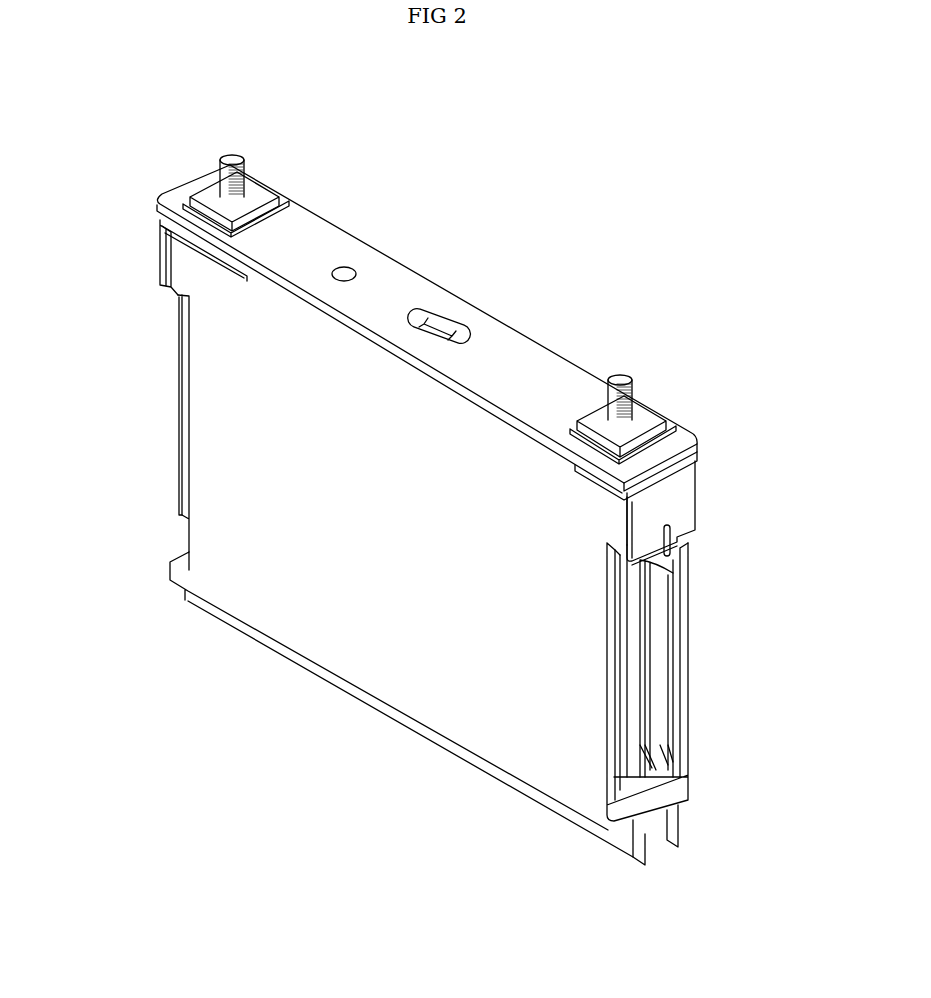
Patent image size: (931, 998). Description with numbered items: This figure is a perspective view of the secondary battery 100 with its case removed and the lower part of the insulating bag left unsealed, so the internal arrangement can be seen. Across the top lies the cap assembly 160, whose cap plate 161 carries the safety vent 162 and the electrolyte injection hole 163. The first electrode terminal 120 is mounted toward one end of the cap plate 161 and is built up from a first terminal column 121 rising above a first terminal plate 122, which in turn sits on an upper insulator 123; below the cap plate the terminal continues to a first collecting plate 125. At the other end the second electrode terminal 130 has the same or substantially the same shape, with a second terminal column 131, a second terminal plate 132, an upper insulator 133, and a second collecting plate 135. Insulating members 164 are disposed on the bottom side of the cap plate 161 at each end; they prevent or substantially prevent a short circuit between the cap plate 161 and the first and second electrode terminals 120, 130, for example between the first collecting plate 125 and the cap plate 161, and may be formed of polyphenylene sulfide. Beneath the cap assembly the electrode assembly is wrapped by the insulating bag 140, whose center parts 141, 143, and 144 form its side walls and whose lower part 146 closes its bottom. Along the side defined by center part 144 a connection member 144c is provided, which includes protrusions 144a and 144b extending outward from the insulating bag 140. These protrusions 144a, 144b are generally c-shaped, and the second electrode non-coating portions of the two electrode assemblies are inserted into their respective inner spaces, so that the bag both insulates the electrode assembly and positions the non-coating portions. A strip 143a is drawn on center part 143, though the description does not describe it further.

The secondary battery 100 is at (588, 182).
The first electrode terminal 120 is at (228, 142).
The first terminal column 121 is at (236, 164).
The first terminal plate 122 is at (258, 192).
The upper insulator 123 is at (290, 206).
The first collecting plate 125 is at (165, 258).
The second electrode terminal 130 is at (614, 362).
The second terminal column 131 is at (630, 379).
The second terminal plate 132 is at (670, 419).
The upper insulator 133 is at (690, 431).
The second collecting plate 135 is at (683, 498).
The insulating bag 140 is at (355, 713).
The center part 141 is at (250, 606).
The center part 143 is at (174, 340).
The flange strip 143a is at (184, 375).
The center part 144 is at (689, 601).
The protrusion 144a is at (630, 657).
The protrusion 144b is at (684, 647).
The connection member 144c is at (617, 732).
The lower part 146 is at (452, 758).
The cap assembly 160 is at (511, 311).
The cap plate 161 is at (410, 277).
The safety vent 162 is at (441, 322).
The electrolyte injection hole 163 is at (346, 268).
The insulating member 164 is at (161, 222).